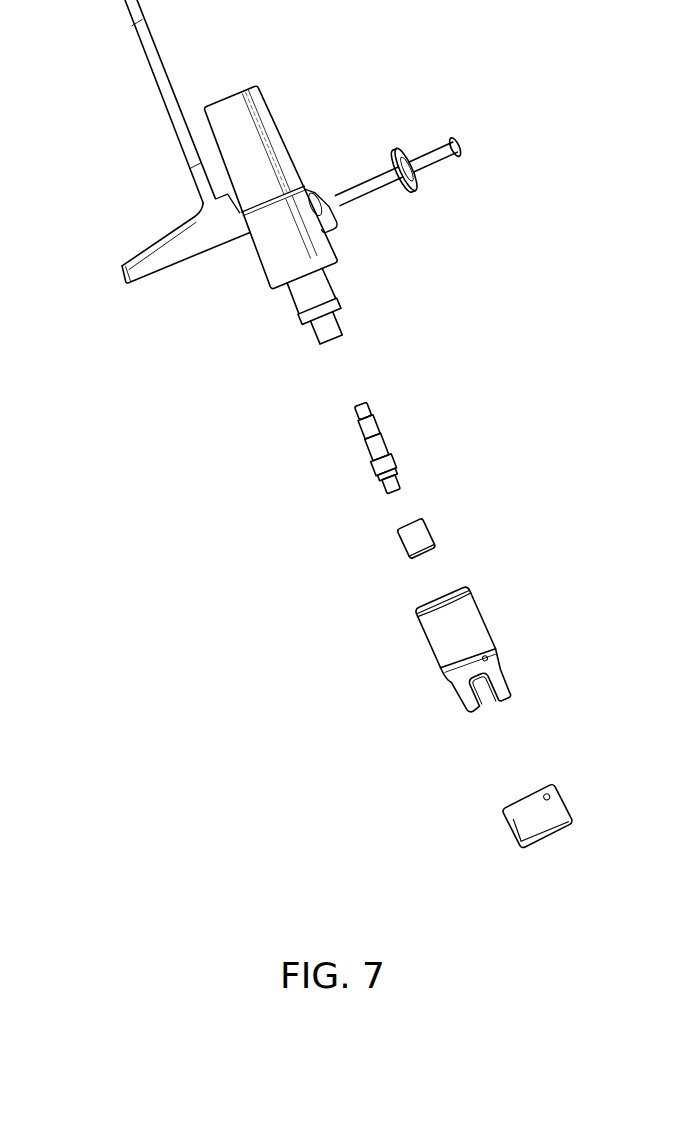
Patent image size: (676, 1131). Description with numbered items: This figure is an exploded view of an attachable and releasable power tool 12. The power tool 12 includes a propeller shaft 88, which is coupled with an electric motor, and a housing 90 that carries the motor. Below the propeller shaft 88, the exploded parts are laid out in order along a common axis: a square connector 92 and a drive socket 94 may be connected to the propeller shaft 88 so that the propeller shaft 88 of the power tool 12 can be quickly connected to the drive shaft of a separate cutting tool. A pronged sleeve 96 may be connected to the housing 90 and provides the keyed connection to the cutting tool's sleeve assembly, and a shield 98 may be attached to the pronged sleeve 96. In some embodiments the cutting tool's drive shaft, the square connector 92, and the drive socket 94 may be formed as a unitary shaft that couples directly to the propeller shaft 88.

The power tool 12 is at (126, 164).
The propeller shaft 88 is at (300, 318).
The housing 90 is at (257, 263).
The square connector 92 is at (367, 451).
The drive socket 94 is at (397, 544).
The pronged sleeve 96 is at (433, 662).
The shield 98 is at (510, 840).